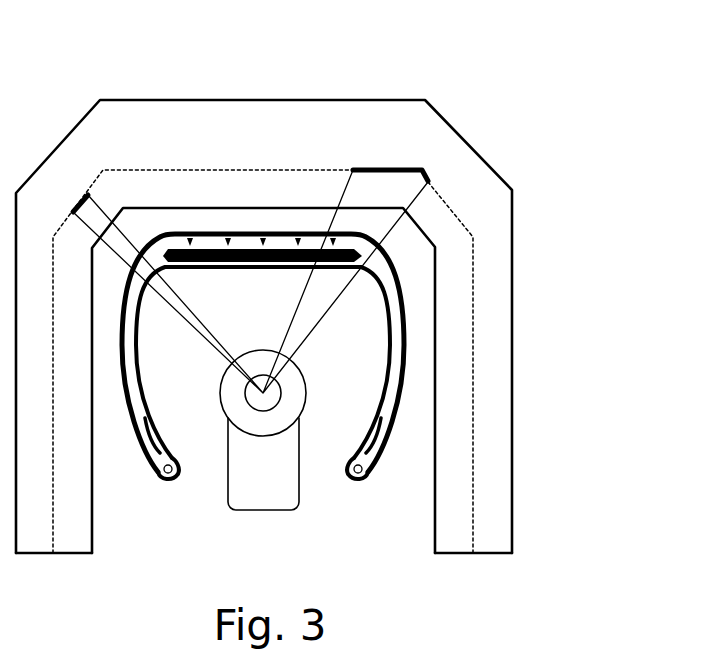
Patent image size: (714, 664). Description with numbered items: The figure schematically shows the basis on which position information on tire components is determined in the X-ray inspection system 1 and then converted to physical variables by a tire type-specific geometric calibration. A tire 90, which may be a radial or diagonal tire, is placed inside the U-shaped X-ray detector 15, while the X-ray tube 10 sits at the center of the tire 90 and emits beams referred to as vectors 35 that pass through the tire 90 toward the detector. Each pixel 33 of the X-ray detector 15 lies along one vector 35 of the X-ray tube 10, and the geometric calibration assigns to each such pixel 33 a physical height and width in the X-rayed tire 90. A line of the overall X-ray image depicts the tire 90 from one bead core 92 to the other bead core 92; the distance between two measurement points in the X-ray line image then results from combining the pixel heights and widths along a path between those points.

The X-ray inspection system 1 is at (537, 397).
The X-ray tube 10 is at (265, 398).
The X-ray detector 15 is at (475, 308).
The pixel 33 is at (317, 233).
The vector 35 is at (303, 296).
The tire 90 is at (402, 383).
The bead core 92 is at (176, 482).